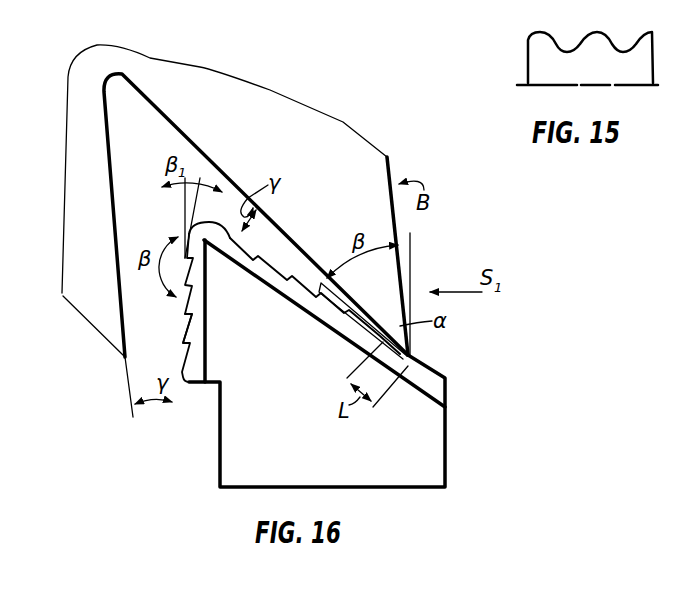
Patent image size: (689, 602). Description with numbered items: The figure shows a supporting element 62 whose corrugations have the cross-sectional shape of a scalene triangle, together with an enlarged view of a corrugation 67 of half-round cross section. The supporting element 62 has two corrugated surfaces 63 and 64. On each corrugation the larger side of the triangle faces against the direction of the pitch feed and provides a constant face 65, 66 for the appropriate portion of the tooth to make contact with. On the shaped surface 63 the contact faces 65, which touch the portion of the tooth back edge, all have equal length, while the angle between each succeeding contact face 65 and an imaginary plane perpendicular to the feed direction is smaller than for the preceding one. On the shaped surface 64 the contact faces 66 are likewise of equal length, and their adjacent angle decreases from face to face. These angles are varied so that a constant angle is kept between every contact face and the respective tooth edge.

In FIG. 16, the supporting element 62 is at (228, 421).
In FIG. 16, the corrugated surface 63 is at (276, 259).
In FIG. 16, the corrugated surface 64 is at (180, 360).
In FIG. 16, the contact face 65 is at (336, 308).
In FIG. 16, the contact face 66 is at (186, 337).
In FIG. 15, the wavy profile surface 67 is at (590, 32).